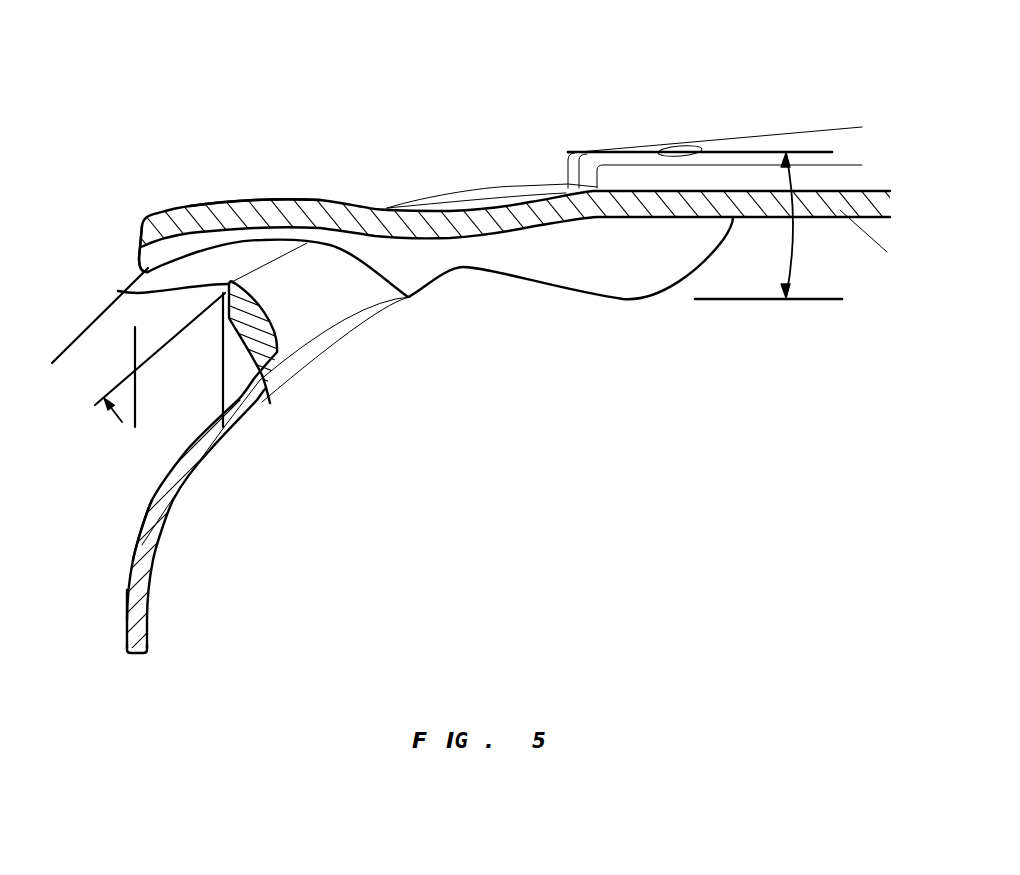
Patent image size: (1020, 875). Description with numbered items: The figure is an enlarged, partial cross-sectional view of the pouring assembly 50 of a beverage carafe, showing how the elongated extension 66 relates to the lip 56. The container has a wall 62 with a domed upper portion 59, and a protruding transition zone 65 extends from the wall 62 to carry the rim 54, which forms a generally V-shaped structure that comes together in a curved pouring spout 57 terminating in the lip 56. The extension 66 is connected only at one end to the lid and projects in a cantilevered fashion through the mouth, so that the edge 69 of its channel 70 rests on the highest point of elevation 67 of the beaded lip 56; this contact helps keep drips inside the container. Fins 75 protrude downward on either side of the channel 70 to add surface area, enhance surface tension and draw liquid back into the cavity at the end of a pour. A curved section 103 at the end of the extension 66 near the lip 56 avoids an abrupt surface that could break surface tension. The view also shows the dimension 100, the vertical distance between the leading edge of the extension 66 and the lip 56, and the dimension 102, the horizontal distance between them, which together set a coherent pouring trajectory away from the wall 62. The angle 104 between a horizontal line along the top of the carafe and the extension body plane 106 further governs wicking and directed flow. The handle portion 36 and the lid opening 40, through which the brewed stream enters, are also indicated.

The handle portion 36 is at (697, 113).
The opening 40 is at (880, 197).
The pouring assembly 50 is at (253, 140).
The rim 54 is at (388, 206).
The lip 56 is at (222, 292).
The pouring spout 57 is at (269, 382).
The domed upper portion 59 is at (162, 481).
The wall 62 is at (127, 590).
The transition zone 65 is at (355, 293).
The elongated extension 66 is at (143, 203).
The highest point of elevation 67 is at (118, 291).
The edge of the channel 69 is at (245, 283).
The channel 70 is at (151, 254).
The fins 75 is at (412, 297).
The dimension 100 is at (58, 352).
The dimension 102 is at (223, 407).
The curved section 103 is at (223, 244).
The angle 104 is at (796, 242).
The extension body plane 106 is at (765, 300).